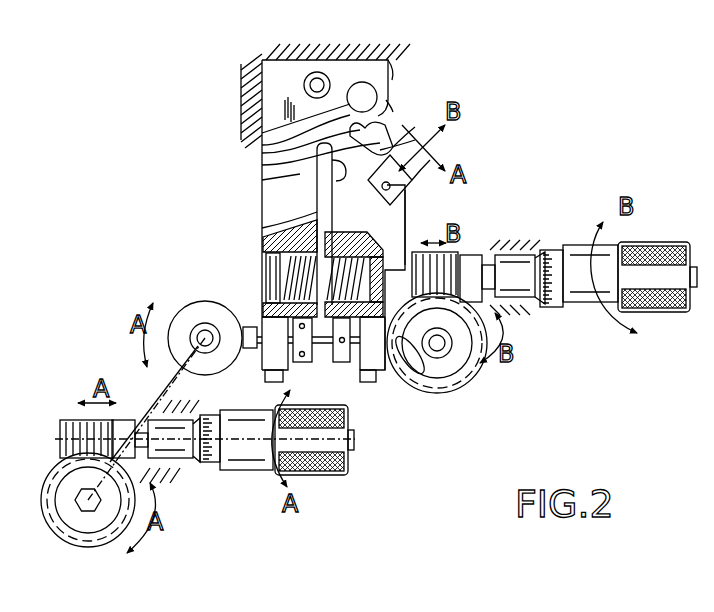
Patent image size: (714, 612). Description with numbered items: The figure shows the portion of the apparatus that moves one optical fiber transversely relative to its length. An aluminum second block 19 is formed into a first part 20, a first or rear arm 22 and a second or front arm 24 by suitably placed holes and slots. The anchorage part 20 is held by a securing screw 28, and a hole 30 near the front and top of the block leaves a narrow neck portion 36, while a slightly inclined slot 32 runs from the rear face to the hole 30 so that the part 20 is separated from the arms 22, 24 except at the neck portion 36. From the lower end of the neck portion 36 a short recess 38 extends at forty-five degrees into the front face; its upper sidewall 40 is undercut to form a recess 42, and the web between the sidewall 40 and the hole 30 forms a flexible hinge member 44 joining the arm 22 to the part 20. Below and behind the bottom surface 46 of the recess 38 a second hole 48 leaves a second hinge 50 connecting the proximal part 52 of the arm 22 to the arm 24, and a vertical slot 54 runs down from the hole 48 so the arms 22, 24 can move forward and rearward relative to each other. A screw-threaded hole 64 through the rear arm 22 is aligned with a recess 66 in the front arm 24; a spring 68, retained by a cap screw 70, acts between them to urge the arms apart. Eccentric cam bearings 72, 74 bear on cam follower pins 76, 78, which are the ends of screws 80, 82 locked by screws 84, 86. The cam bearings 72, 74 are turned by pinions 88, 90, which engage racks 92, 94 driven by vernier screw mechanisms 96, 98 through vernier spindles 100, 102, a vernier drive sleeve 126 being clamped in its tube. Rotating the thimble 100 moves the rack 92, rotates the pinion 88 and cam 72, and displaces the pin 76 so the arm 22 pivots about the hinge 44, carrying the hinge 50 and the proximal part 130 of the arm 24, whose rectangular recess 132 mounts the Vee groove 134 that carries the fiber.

The second block 19 is at (262, 180).
The first part 20 is at (332, 68).
The first arm 22 is at (262, 197).
The second arm 24 is at (407, 246).
The securing screw 28 is at (305, 79).
The hole 30 is at (362, 83).
The slot 32 is at (257, 83).
The neck portion 36 is at (390, 62).
The recess 38 is at (415, 127).
The upper sidewall 40 is at (395, 122).
The recess 42 is at (263, 148).
The flexible hinge member 44 is at (393, 112).
The bottom surface 46 is at (415, 140).
The second hole 48 is at (332, 200).
The second hinge 50 is at (263, 157).
The proximal part 52 is at (260, 143).
The vertical slot 54 is at (262, 228).
The screw-threaded hole 64 is at (262, 247).
The recess 66 is at (378, 256).
The spring 68 is at (264, 317).
The cap screw 70 is at (262, 270).
The cam bearing 72 is at (187, 310).
The cam bearing 74 is at (467, 357).
The cam follower pin 76 is at (257, 353).
The cam follower pin 78 is at (440, 395).
The screw 80 is at (308, 362).
The screw 82 is at (372, 362).
The locking screw 84 is at (270, 378).
The screw 86 is at (397, 347).
The pinion 88 is at (88, 547).
The pinion 90 is at (457, 383).
The rack 92 is at (65, 423).
The rack 94 is at (468, 252).
The vernier screw mechanism 96 is at (327, 473).
The vernier screw mechanism 98 is at (597, 310).
The vernier spindle 100 is at (347, 460).
The vernier spindle 102 is at (663, 310).
The vernier drive sleeve 126 is at (180, 463).
The part 130 is at (462, 193).
The recess 132 is at (405, 197).
The Vee groove 134 is at (430, 157).